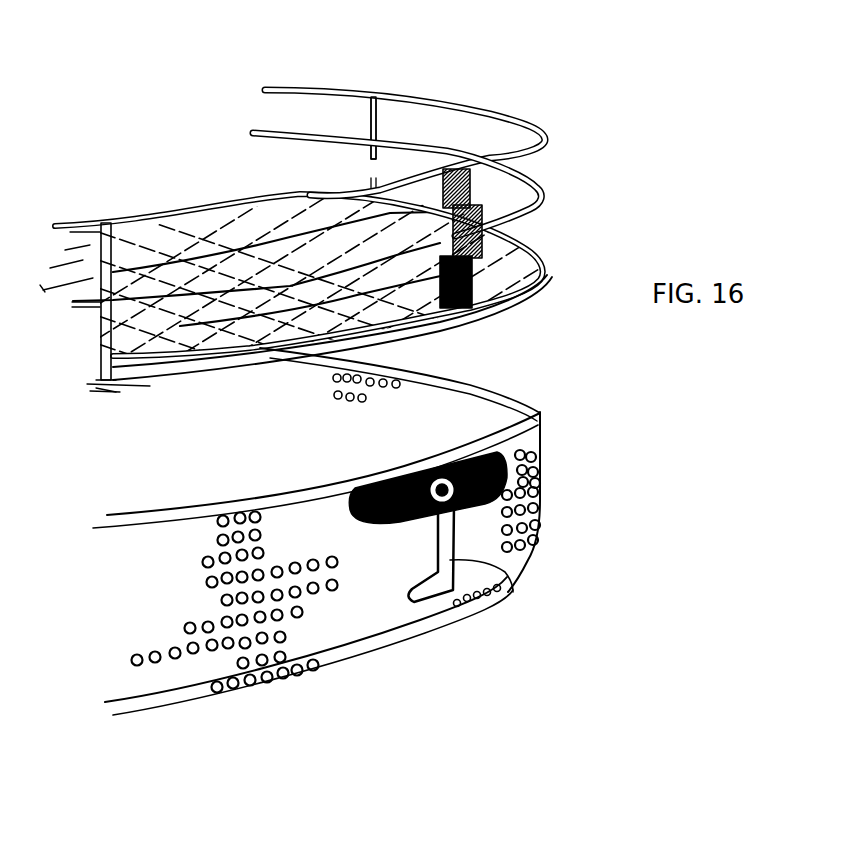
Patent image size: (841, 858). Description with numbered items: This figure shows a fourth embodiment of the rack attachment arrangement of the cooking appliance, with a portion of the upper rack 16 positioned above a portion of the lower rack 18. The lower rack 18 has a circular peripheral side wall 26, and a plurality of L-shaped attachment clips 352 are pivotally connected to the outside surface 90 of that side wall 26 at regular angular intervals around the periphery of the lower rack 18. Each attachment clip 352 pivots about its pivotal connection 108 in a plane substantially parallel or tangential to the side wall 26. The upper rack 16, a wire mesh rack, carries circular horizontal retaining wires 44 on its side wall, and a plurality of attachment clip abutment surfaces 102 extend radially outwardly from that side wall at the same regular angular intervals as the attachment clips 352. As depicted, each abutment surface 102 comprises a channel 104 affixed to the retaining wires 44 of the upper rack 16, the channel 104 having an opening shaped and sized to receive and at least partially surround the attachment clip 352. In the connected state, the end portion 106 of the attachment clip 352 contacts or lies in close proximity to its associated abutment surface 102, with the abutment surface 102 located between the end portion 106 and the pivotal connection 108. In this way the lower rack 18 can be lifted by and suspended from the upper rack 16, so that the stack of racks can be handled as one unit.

The upper rack 16 is at (545, 130).
The lower rack 18 is at (542, 478).
The peripheral side wall 26 is at (414, 533).
The horizontal retaining wires 44 is at (437, 100).
The outside surface 90 is at (541, 520).
The attachment clip abutment surface 102 is at (542, 250).
The channel 104 is at (538, 178).
The end portion 106 is at (420, 597).
The pivotal connection 108 is at (398, 528).
The attachment clip 352 is at (513, 592).